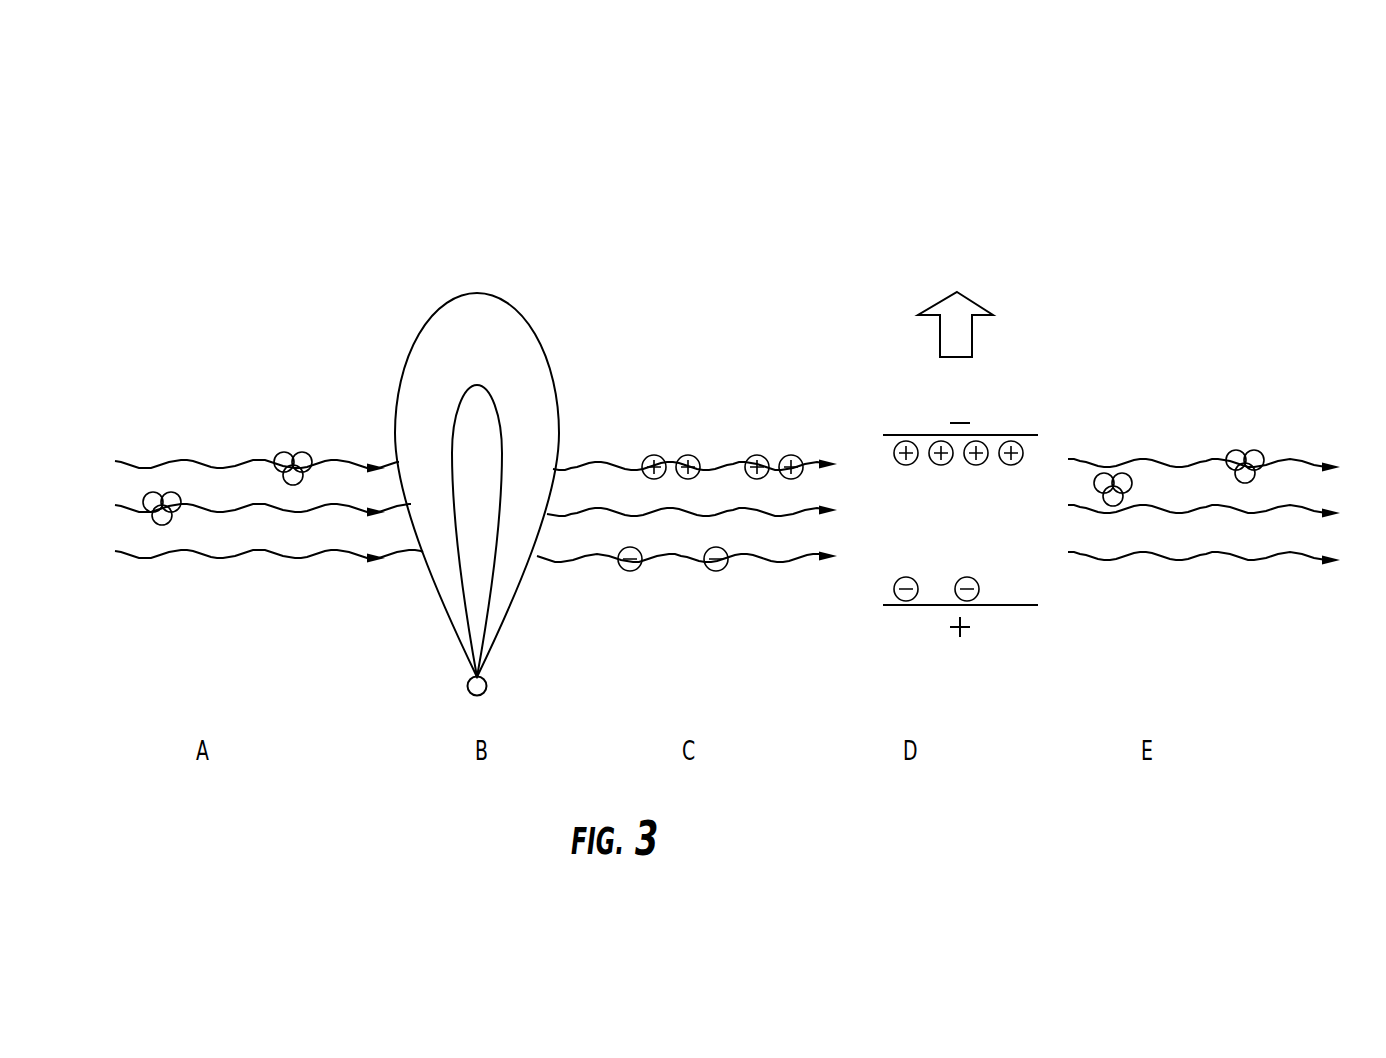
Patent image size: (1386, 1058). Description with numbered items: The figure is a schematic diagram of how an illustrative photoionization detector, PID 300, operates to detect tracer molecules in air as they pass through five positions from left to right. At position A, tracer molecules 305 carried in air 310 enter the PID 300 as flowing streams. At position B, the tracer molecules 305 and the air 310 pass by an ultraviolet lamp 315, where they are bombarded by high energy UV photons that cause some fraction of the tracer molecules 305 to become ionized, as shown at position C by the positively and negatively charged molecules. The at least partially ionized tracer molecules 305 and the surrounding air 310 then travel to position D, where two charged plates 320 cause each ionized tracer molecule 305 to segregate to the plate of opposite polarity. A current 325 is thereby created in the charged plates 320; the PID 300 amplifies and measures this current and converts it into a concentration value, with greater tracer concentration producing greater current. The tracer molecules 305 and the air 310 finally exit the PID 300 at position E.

The photoionization detector (PID) 300 is at (687, 262).
The tracer molecules 305 is at (168, 492).
The air 310 is at (185, 558).
The ultraviolet (UV) lamp 315 is at (560, 382).
The charged plates 320 is at (996, 435).
The current 325 is at (975, 283).